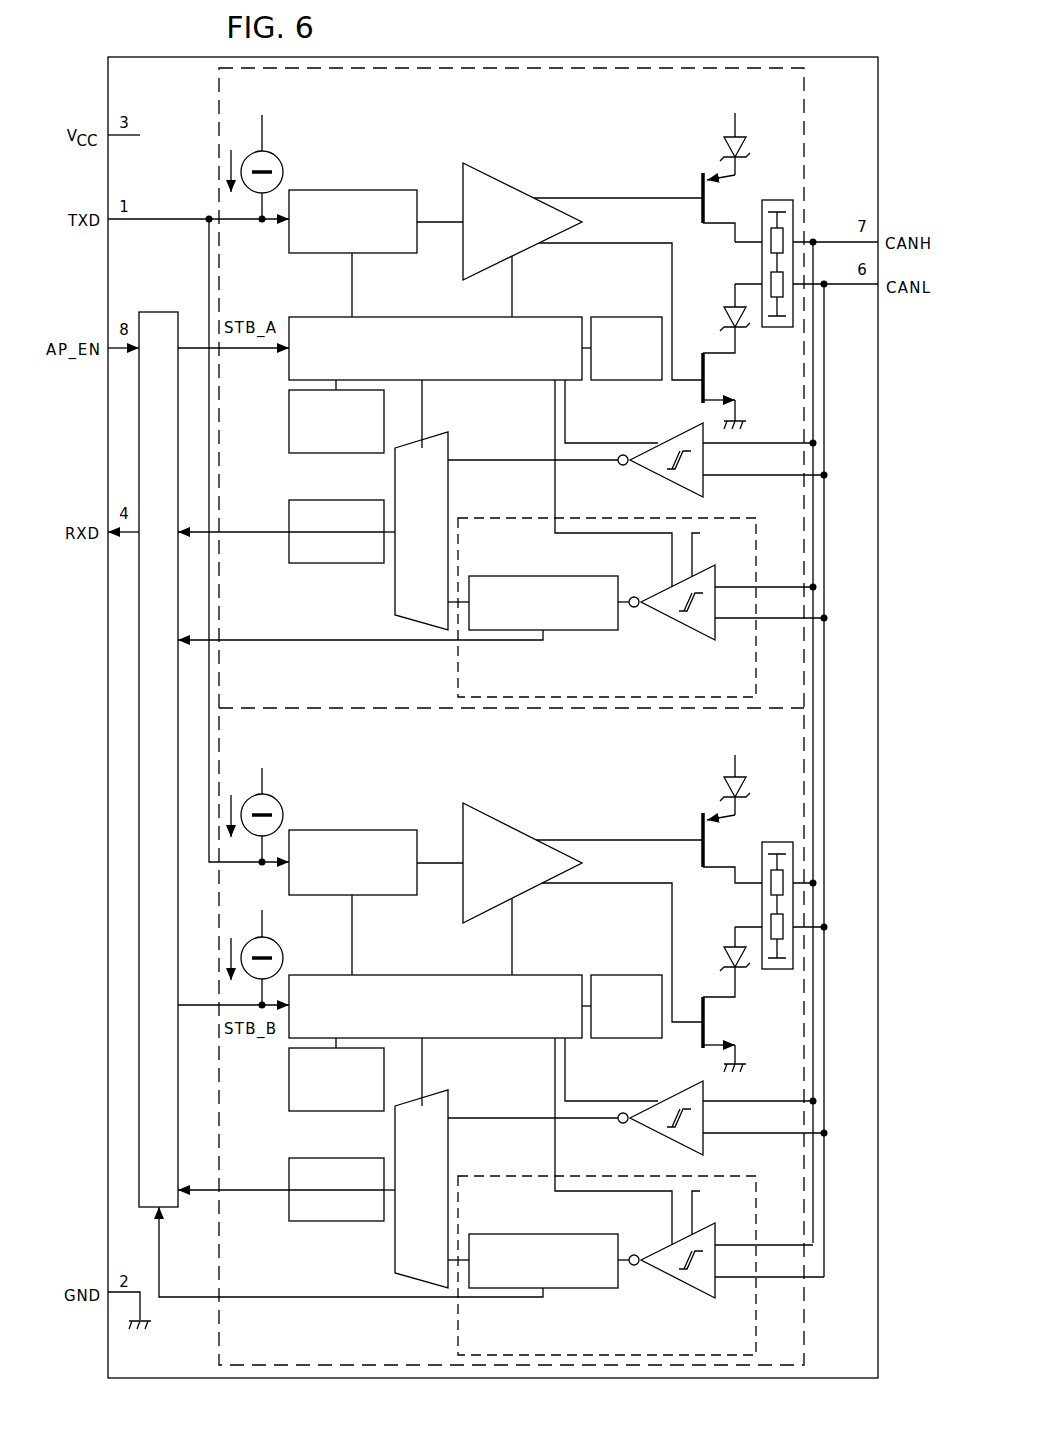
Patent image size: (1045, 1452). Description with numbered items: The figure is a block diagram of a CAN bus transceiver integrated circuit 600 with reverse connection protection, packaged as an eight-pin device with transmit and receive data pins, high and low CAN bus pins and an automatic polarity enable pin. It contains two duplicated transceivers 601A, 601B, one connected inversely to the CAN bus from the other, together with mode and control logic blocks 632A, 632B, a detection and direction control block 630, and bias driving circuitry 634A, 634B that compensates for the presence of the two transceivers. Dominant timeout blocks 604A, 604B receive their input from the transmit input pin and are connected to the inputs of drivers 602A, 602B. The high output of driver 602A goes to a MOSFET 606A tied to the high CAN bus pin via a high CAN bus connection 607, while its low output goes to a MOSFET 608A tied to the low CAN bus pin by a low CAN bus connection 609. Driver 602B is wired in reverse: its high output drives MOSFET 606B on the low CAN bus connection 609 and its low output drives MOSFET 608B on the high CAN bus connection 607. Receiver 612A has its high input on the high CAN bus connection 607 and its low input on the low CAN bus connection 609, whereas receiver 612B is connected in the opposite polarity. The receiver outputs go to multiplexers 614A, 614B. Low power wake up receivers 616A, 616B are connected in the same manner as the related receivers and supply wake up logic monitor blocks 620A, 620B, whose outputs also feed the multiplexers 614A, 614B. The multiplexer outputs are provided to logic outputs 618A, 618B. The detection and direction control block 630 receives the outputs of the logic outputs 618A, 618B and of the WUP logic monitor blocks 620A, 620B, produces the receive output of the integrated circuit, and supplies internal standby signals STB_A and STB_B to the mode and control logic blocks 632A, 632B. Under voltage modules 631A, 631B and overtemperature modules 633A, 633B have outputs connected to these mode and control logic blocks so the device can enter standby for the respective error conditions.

The CAN bus transceiver integrated circuit 600 is at (695, 42).
The detection and direction control block 630 is at (156, 311).
The transceiver 601A is at (486, 118).
The transceiver 601B is at (486, 758).
The dominant timeout block 604A is at (347, 190).
The dominant timeout block 604B is at (347, 830).
The driver 602A is at (525, 192).
The driver 602B is at (525, 832).
The MOSFET 606A is at (699, 183).
The MOSFET 606B is at (699, 823).
The MOSFET 608A is at (697, 395).
The MOSFET 608B is at (689, 1043).
The high CAN bus connection 607 is at (838, 240).
The low CAN bus connection 609 is at (830, 288).
The bias driving circuitry 634A is at (780, 328).
The bias driving circuitry 634B is at (780, 970).
The mode and control logic block 632A is at (420, 316).
The mode and control logic block 632B is at (418, 974).
The overtemperature module 633A is at (628, 316).
The overtemperature module 633B is at (628, 974).
The under voltage module 631A is at (325, 454).
The under voltage module 631B is at (325, 1111).
The multiplexer 614A is at (450, 502).
The multiplexer 614B is at (450, 1160).
The receiver 612A is at (666, 484).
The receiver 612B is at (666, 1142).
The logic output 618A is at (334, 564).
The logic output 618B is at (334, 1222).
The WUP logic monitor block 620A is at (516, 576).
The WUP logic monitor block 620B is at (516, 1234).
The low power wake up receiver 616A is at (654, 593).
The low power wake up receiver 616B is at (654, 1251).